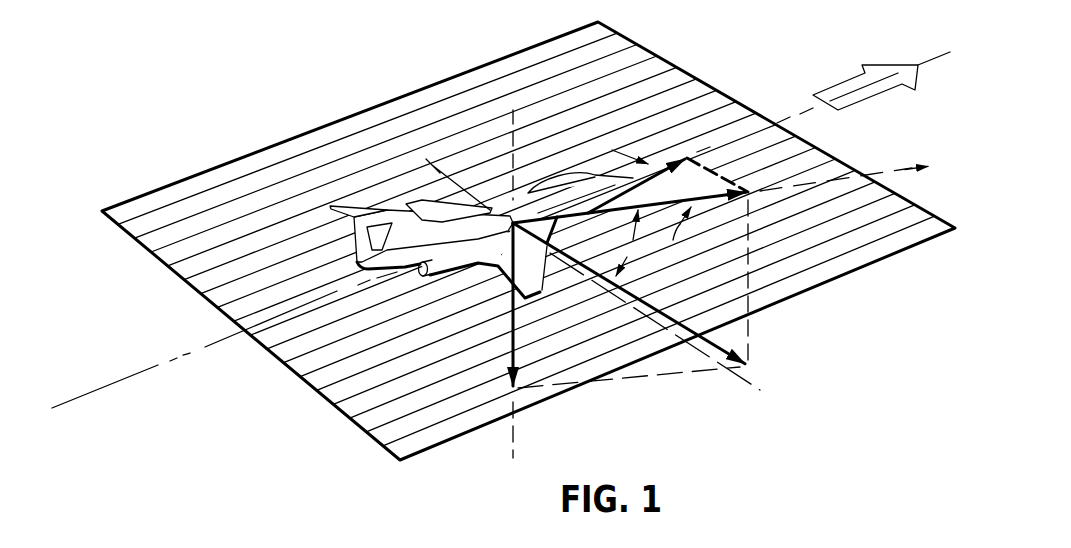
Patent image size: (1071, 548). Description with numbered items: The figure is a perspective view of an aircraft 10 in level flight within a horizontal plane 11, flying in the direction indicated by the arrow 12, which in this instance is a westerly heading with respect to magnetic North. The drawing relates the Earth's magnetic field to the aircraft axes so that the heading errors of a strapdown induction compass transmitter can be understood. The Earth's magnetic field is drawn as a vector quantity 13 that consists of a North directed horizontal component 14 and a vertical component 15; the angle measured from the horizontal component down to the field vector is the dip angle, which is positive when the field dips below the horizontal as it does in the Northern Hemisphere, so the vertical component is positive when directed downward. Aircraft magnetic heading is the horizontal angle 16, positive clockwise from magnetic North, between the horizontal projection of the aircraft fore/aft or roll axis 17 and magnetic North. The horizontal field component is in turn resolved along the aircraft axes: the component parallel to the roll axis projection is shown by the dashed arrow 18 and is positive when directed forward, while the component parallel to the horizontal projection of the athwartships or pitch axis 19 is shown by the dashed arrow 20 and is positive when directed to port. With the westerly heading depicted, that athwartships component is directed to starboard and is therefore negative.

The aircraft 10 is at (468, 270).
The horizontal plane 11 is at (614, 27).
The arrow 12 is at (836, 85).
The Earth's magnetic field vector 13 is at (636, 291).
The horizontal component 14 is at (742, 198).
The vertical component 15 is at (507, 342).
The magnetic heading angle 16 is at (716, 172).
The horizontal projection of the aircraft fore/aft or roll axis 17 is at (334, 298).
The dashed arrow 18 is at (667, 157).
The horizontal projection of the aircraft athwartships or pitch axis 19 is at (432, 165).
The dashed arrow 20 is at (526, 300).